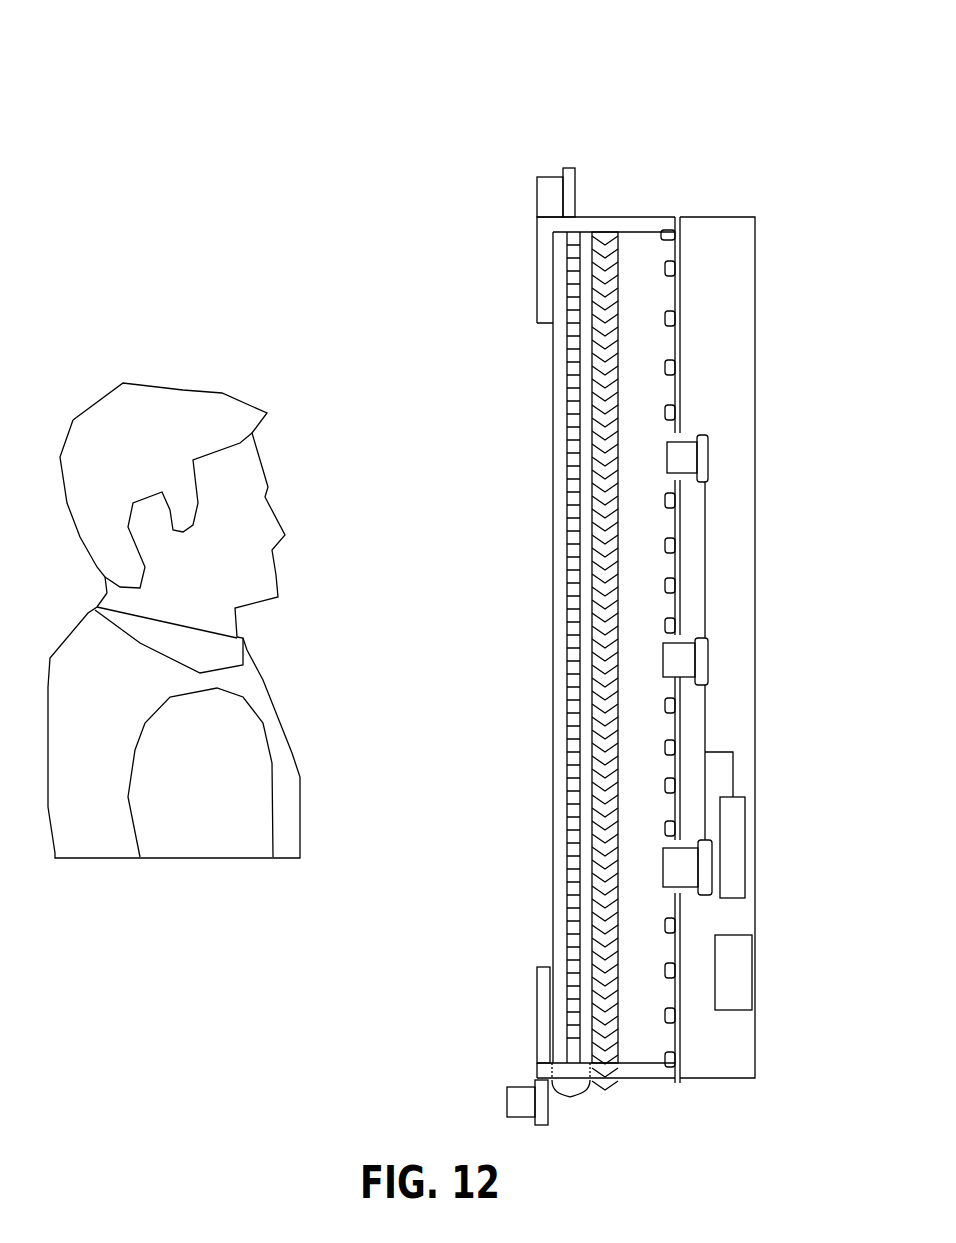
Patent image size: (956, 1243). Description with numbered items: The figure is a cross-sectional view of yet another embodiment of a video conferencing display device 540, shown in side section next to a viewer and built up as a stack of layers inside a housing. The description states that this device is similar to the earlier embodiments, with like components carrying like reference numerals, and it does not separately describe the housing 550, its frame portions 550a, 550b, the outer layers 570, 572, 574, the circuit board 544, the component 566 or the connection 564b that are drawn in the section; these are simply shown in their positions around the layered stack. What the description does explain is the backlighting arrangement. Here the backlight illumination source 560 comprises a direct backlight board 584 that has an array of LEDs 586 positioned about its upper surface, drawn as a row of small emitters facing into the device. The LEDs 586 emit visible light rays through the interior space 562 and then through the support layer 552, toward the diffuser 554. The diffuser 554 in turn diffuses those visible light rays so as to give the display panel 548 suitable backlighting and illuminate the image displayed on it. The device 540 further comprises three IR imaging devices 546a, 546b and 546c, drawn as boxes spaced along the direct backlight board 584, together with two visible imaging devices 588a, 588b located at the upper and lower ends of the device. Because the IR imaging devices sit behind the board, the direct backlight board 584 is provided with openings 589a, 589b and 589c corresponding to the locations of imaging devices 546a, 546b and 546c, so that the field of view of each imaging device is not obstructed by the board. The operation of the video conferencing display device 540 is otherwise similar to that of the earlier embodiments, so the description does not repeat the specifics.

The video conferencing display device 540 is at (184, 110).
The circuit board 544 is at (745, 797).
The IR imaging device 546a is at (708, 470).
The IR imaging device 546b is at (708, 655).
The IR imaging device 546c is at (707, 842).
The display panel 548 is at (570, 1100).
The housing 550 is at (755, 1025).
The front frame portion 550a is at (541, 861).
The frame tab 550b is at (537, 993).
The support layer 552 is at (608, 236).
The diffuser 554 is at (597, 236).
The backlight illumination source 560 is at (653, 268).
The interior space 562 is at (638, 1028).
The wiring 564b is at (705, 732).
The battery 566 is at (735, 960).
The cover layer 570 is at (558, 238).
The glass layer 572 is at (574, 240).
The DBEF film 574 is at (588, 240).
The direct backlight board 584 is at (679, 1000).
The LEDs 586 is at (672, 1010).
The visible imaging device 588a is at (537, 190).
The visible imaging device 588b is at (507, 1100).
The opening 589a is at (700, 435).
The opening 589b is at (700, 638).
The opening 589c is at (712, 890).